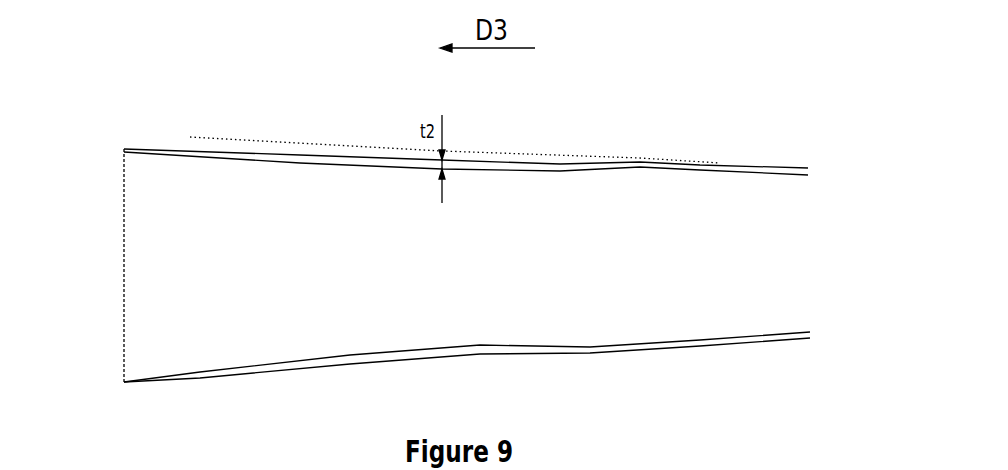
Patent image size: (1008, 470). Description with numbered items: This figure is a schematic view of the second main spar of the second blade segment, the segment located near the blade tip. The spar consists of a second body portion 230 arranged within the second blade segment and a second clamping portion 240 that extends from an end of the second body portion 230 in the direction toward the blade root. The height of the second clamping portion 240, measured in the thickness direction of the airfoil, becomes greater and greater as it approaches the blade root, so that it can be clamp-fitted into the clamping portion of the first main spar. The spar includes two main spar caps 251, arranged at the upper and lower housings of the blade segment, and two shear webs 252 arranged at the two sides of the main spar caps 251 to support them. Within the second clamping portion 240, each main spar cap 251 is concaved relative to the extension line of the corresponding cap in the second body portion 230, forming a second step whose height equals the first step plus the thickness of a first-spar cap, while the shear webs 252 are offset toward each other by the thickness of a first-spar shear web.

The second body portion 230 is at (753, 270).
The second clamping portion 240 is at (152, 225).
The main spar cap 251 is at (204, 155).
The shear web 252 is at (124, 318).